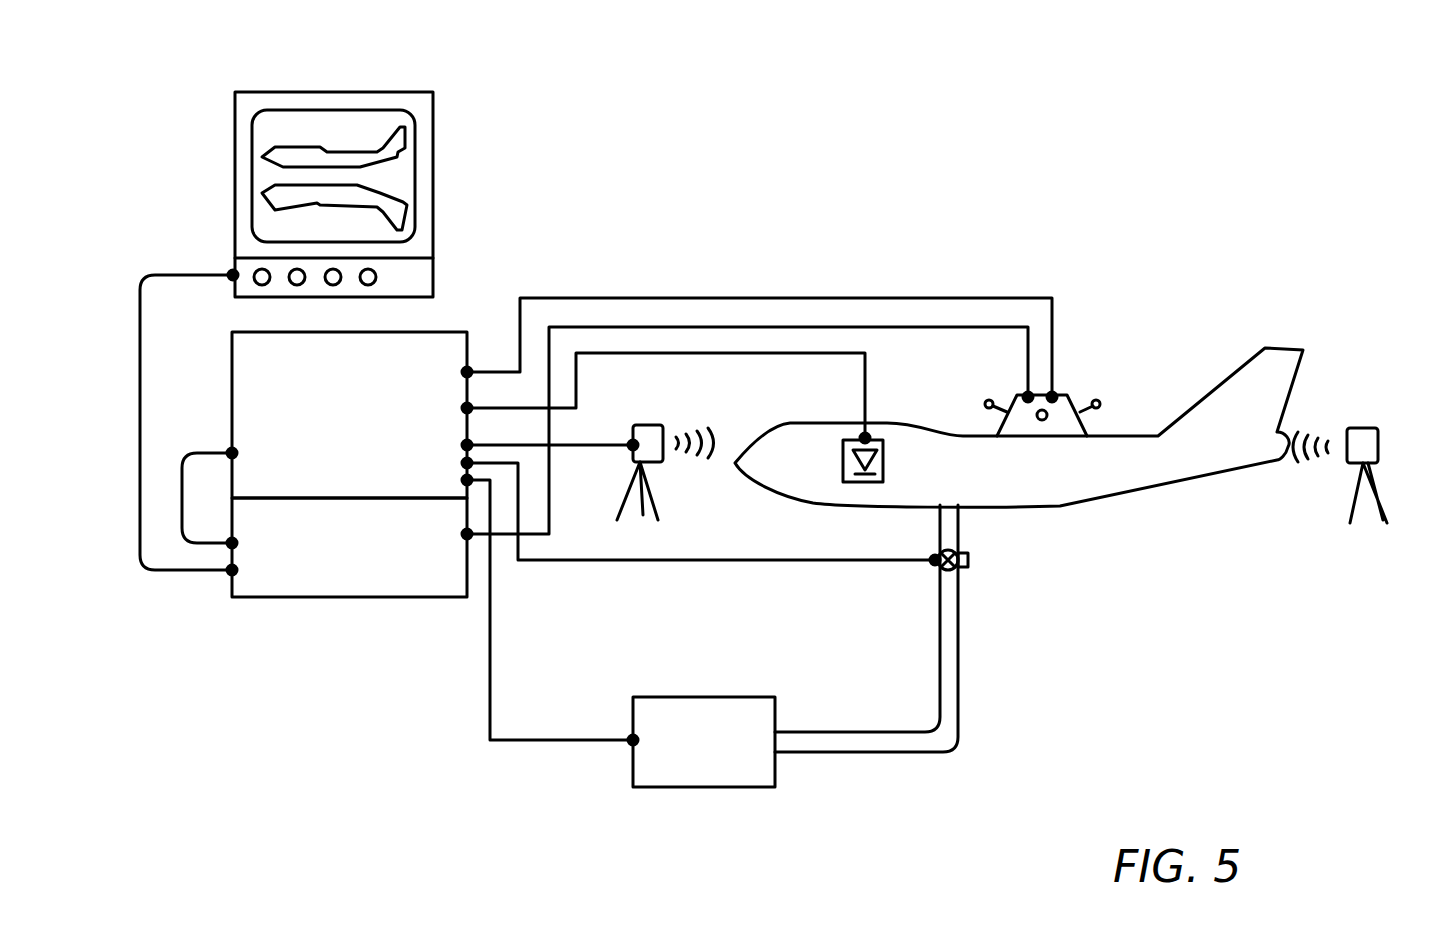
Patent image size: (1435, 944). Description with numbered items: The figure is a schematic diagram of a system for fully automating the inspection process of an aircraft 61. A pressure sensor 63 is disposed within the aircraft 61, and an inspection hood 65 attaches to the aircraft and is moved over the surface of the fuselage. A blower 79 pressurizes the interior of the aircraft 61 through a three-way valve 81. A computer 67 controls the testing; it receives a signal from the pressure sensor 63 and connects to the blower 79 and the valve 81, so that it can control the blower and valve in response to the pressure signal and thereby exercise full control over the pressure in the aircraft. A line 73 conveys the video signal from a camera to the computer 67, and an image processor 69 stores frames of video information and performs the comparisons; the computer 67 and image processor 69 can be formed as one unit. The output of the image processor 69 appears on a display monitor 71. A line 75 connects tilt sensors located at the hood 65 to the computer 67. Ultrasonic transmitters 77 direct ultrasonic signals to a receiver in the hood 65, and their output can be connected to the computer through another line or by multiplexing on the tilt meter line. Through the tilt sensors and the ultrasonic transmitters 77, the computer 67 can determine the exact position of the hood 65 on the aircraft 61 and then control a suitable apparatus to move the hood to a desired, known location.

The aircraft 61 is at (1113, 485).
The pressure sensor 63 is at (892, 457).
The inspection hood 65 is at (1065, 410).
The computer 67 is at (437, 340).
The image processor 69 is at (298, 592).
The display monitor 71 is at (362, 130).
The line 73 is at (922, 328).
The line 75 is at (642, 298).
The ultrasonic transmitters 77 is at (648, 433).
The blower 79 is at (723, 778).
The three-way valve 81 is at (952, 575).